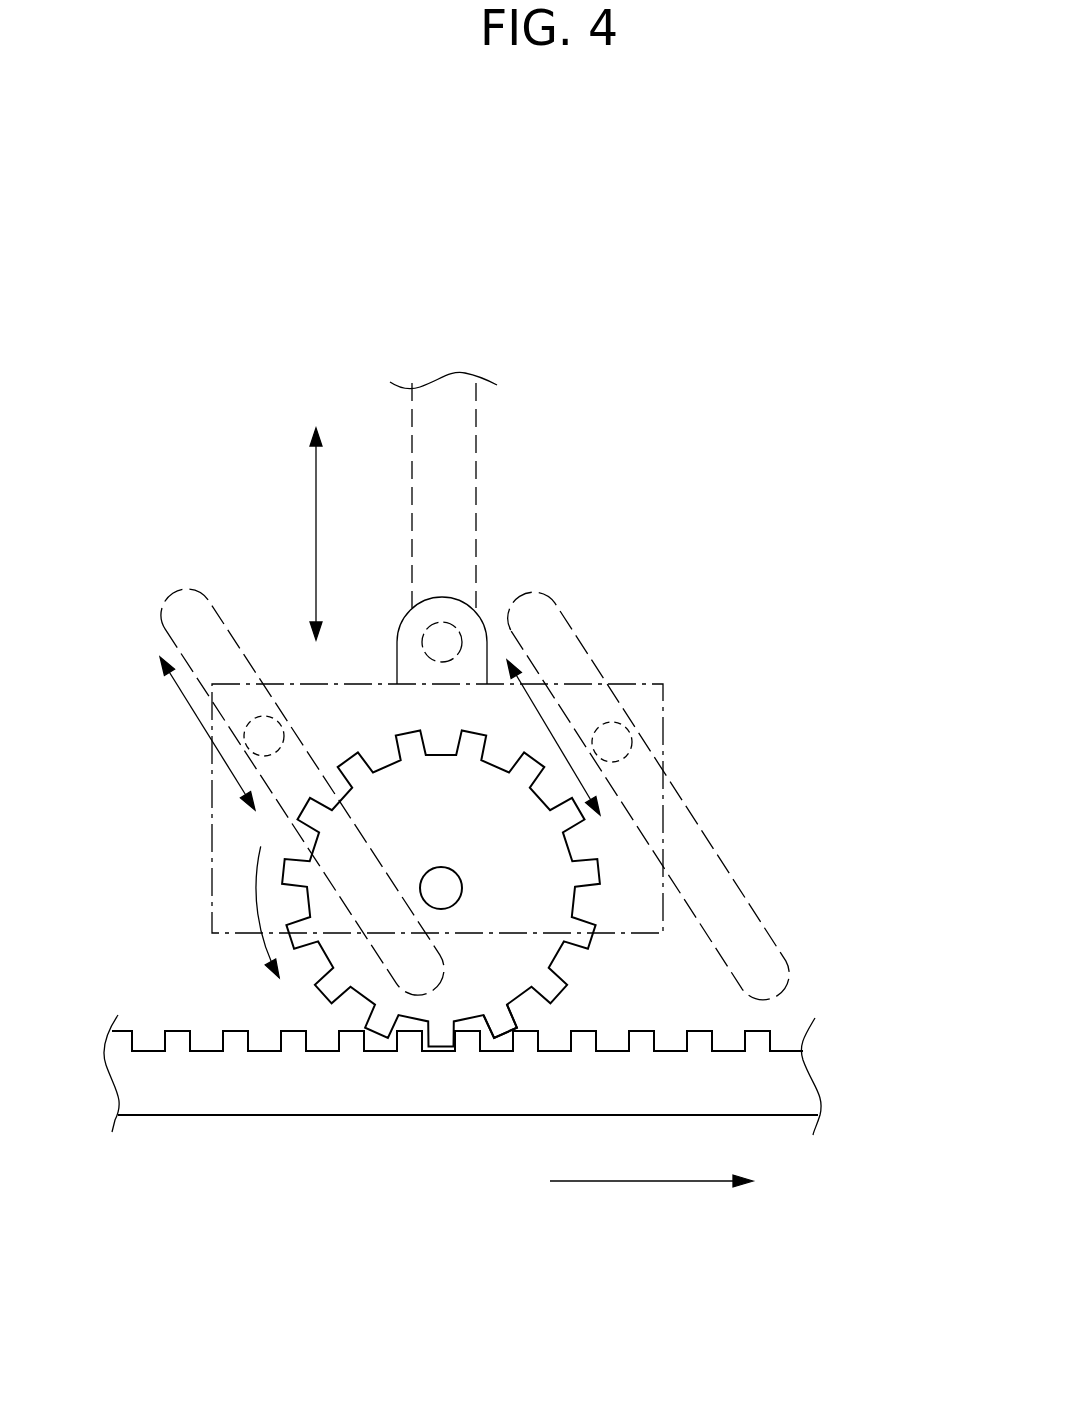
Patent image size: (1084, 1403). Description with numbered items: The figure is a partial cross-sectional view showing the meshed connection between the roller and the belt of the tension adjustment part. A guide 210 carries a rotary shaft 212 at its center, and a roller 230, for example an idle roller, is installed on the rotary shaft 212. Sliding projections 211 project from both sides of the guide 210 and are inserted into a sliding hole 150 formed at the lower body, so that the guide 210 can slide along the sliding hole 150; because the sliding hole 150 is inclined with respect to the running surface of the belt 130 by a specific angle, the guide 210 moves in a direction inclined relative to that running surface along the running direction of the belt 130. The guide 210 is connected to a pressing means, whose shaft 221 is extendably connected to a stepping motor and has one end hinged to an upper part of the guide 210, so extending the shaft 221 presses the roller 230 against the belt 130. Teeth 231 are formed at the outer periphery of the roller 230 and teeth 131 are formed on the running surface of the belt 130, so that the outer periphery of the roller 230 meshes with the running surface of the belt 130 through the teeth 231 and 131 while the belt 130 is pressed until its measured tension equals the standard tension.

The belt 130 is at (175, 1097).
The teeth 131 is at (177, 1028).
The sliding hole 150 is at (561, 607).
The guide 210 is at (632, 906).
The sliding projections 211 is at (612, 740).
The rotary shaft 212 is at (437, 888).
The shaft 221 is at (453, 482).
The roller 230 is at (473, 960).
The teeth 231 is at (505, 1037).